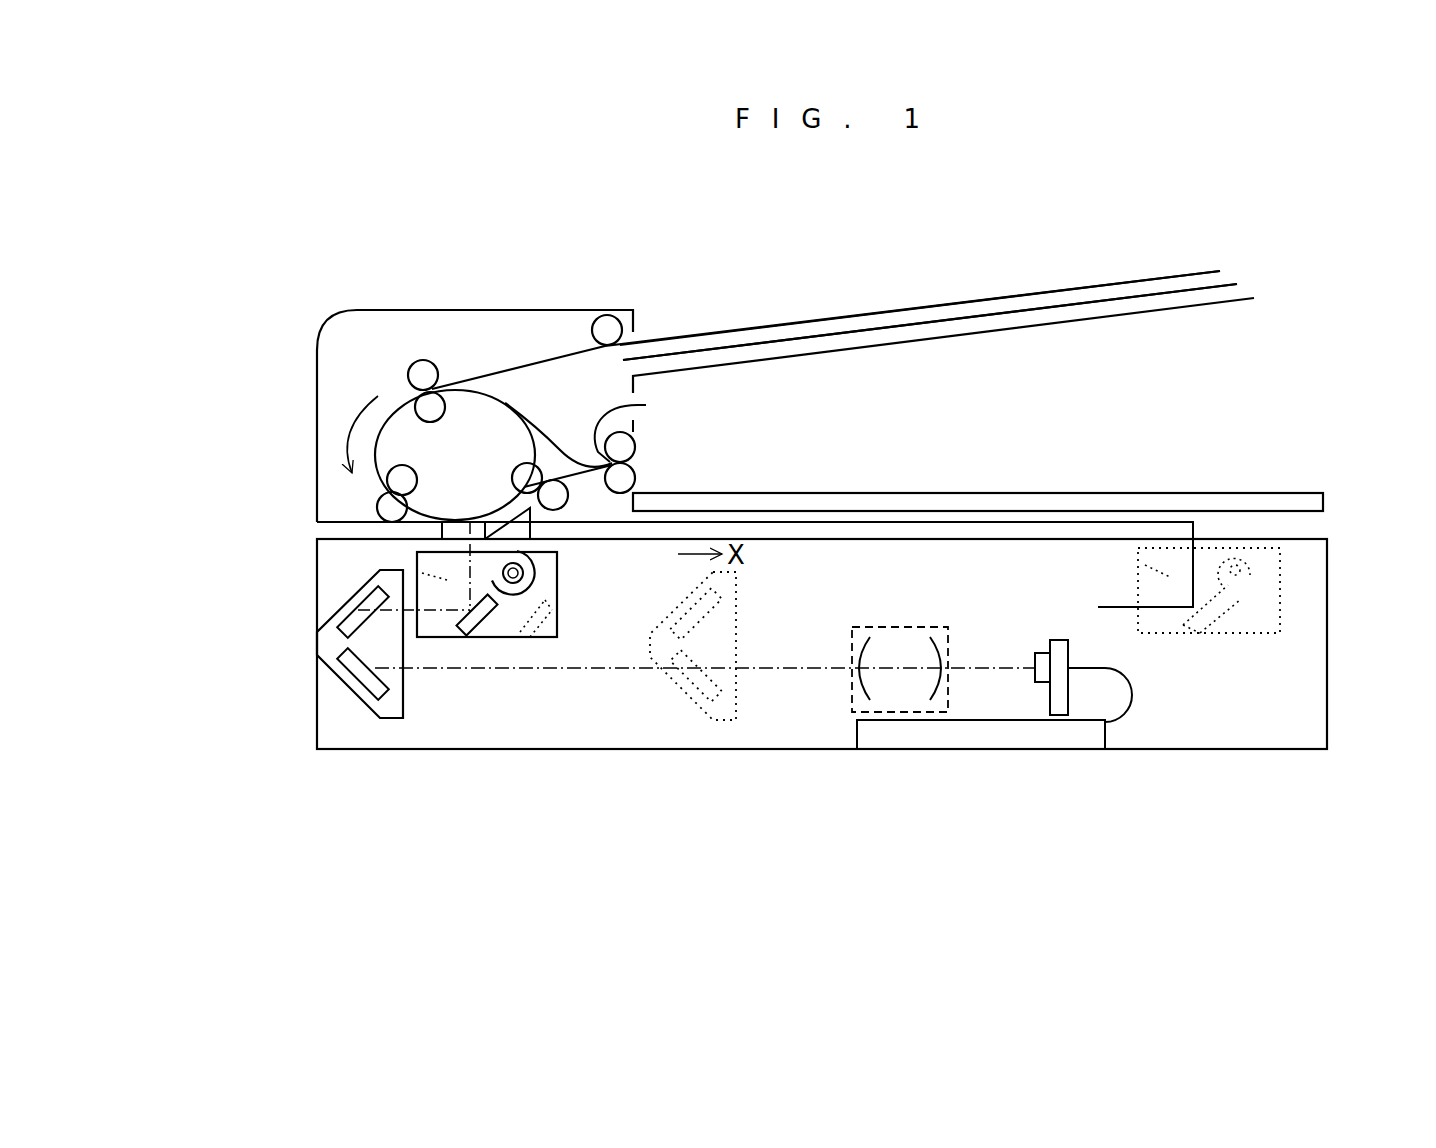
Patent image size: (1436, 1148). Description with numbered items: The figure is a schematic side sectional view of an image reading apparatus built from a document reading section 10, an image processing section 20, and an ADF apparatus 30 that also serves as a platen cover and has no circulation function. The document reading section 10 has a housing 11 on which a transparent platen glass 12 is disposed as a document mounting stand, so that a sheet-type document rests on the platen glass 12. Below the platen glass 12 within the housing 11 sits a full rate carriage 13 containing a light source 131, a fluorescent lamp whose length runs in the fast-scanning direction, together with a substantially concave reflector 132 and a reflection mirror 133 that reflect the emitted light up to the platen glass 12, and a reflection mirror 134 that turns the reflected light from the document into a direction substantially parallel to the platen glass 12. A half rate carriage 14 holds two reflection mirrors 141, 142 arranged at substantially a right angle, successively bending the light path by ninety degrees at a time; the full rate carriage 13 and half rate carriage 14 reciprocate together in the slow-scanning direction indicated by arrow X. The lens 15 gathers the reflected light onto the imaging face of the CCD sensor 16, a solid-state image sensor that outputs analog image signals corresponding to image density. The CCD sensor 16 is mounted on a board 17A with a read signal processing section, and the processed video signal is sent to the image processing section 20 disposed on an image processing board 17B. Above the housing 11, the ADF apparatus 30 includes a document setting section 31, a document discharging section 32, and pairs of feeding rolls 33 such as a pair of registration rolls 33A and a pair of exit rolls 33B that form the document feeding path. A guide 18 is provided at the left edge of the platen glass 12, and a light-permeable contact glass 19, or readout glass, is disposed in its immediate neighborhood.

The document reading section 10 is at (1293, 603).
The housing 11 is at (1327, 662).
The platen glass 12 is at (1033, 530).
The full rate carriage 13 is at (521, 609).
The light source 131 is at (522, 582).
The reflector 132 is at (535, 577).
The reflection mirror 133 is at (433, 577).
The reflection mirror 134 is at (488, 630).
The half rate carriage 14 is at (329, 660).
The reflection mirror 141 is at (350, 602).
The reflection mirror 142 is at (350, 687).
The lens 15 is at (850, 688).
The CCD sensor 16 is at (1035, 658).
The board 17A is at (1068, 655).
The image processing board 17B is at (1105, 733).
The guide 18 is at (513, 524).
The contact glass 19 is at (463, 530).
The image processing section 20 is at (935, 740).
The ADF apparatus 30 is at (458, 285).
The document setting section 31 is at (757, 322).
The document discharging section 32 is at (743, 492).
The feeding rolls 33 is at (253, 417).
The registration rolls 33A is at (590, 455).
The exit rolls 33B is at (370, 498).